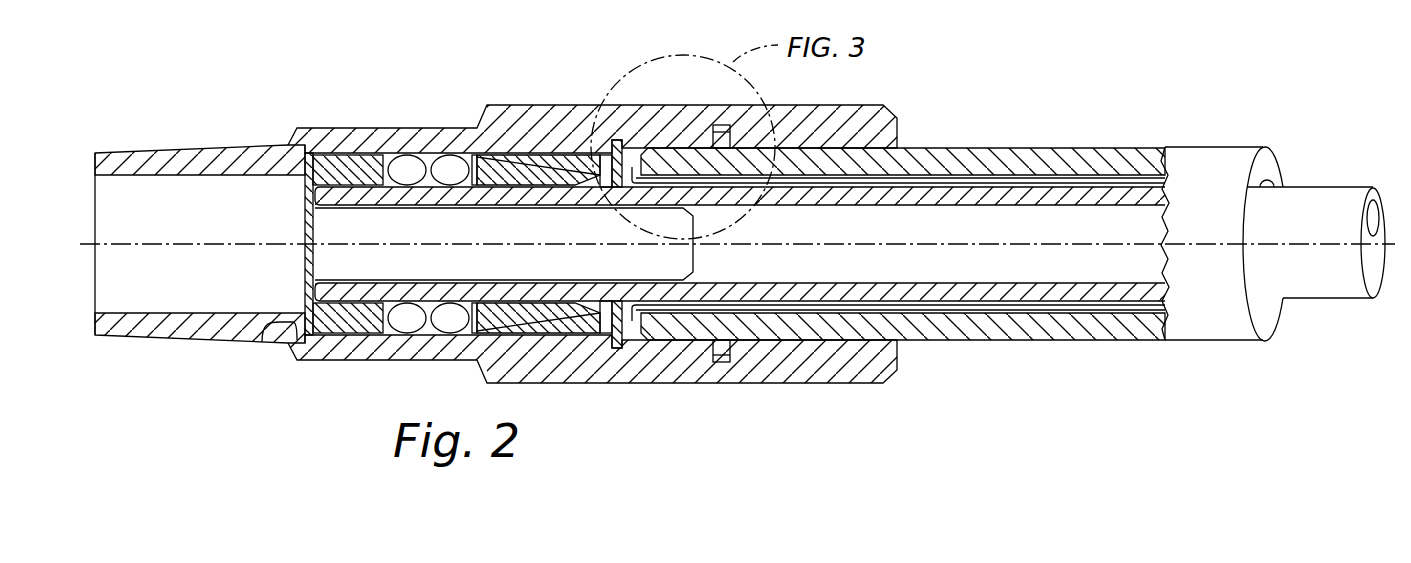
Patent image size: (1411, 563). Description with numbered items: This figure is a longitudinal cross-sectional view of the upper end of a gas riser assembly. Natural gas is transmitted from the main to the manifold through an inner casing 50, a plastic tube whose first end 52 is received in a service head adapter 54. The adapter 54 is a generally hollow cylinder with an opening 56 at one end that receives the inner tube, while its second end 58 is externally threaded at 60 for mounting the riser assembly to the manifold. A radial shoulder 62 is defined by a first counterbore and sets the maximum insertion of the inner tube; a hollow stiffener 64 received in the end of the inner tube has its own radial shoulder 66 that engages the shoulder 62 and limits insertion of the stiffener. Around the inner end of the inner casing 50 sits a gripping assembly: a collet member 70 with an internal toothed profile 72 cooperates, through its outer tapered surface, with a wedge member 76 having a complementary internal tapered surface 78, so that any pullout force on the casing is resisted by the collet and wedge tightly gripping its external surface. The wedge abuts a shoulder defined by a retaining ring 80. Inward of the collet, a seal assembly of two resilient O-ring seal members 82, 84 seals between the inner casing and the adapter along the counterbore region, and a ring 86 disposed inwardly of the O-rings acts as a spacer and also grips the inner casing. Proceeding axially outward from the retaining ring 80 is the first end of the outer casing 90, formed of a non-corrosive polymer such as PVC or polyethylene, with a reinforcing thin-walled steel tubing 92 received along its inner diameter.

The inner casing 50 is at (1345, 187).
The first end of the inner casing 52 is at (338, 197).
The adapter 54 is at (522, 122).
The opening 56 is at (910, 148).
The second end of the adapter 58 is at (82, 335).
The external threads 60 is at (152, 152).
The radial shoulder 62 is at (268, 345).
The hollow stiffener 64 is at (372, 208).
The radial shoulder of the stiffener 66 is at (283, 148).
The collet member 70 is at (522, 316).
The internal toothed profile 72 is at (500, 303).
The wedge member 76 is at (558, 155).
The internal tapered surface 78 is at (584, 312).
The retaining ring 80 is at (618, 348).
The seal member 82 is at (451, 155).
The seal member 84 is at (408, 155).
The ring 86 is at (352, 153).
The outer casing 90 is at (1012, 340).
The thin-walled steel tubing 92 is at (1090, 180).